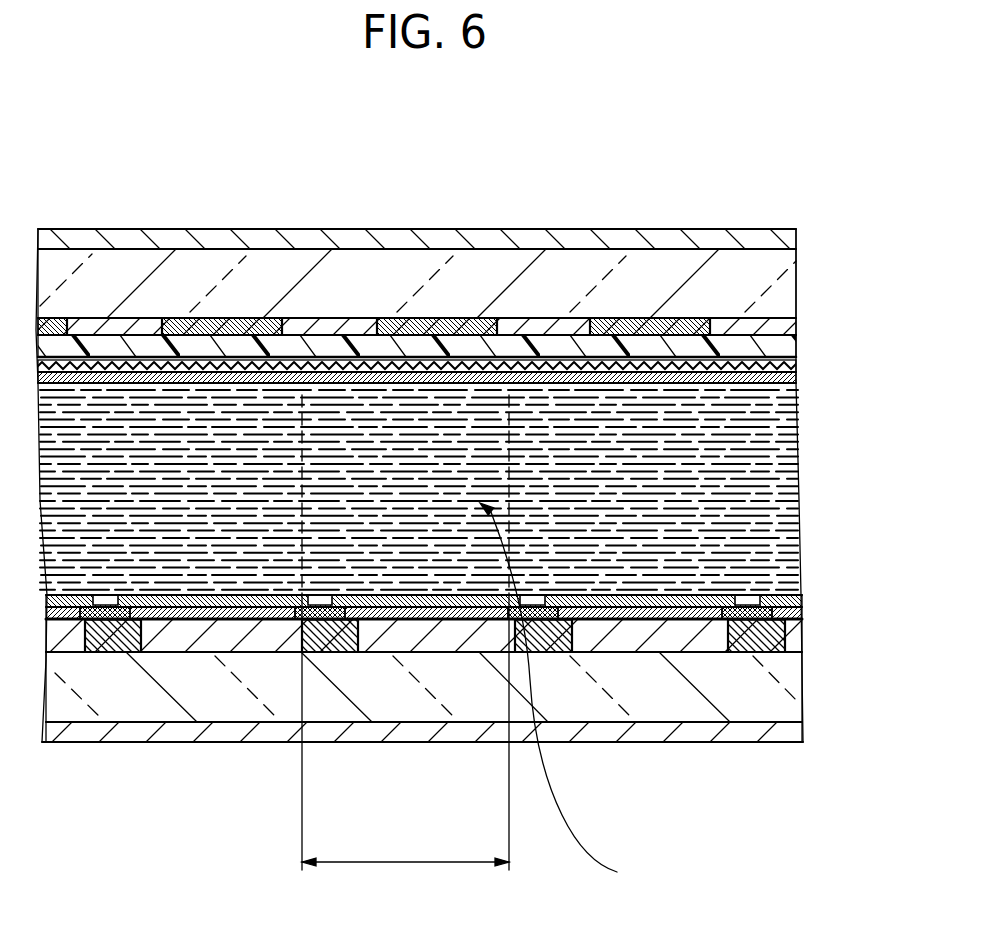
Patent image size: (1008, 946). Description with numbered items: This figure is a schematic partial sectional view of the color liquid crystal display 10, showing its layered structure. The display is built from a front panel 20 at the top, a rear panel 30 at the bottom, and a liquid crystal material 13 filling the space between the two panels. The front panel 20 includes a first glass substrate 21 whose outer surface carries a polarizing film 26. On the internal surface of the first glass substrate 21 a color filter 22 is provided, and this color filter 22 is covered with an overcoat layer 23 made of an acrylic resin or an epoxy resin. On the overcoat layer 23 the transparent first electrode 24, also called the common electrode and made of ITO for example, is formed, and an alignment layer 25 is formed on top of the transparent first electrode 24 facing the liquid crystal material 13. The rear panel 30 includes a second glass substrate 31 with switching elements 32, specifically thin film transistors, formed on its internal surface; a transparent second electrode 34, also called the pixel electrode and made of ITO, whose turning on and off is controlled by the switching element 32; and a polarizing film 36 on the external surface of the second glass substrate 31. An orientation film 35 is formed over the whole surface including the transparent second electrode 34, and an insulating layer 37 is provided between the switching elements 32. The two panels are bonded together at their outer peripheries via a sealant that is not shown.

The color liquid crystal display 10 is at (650, 110).
The liquid crystal material 13 is at (745, 485).
The front panel 20 is at (419, 200).
The first glass substrate 21 is at (625, 268).
The color filter 22 is at (265, 322).
The overcoat layer 23 is at (770, 352).
The transparent first electrode 24 is at (127, 355).
The alignment layer 25 is at (720, 386).
The polarizing film 26 is at (523, 234).
The rear panel 30 is at (262, 812).
The second glass substrate 31 is at (722, 690).
The switching element 32 is at (768, 656).
The transparent second electrode 34 is at (198, 622).
The orientation film 35 is at (775, 600).
The polarizing film 36 is at (632, 735).
The insulating layer 37 is at (270, 620).